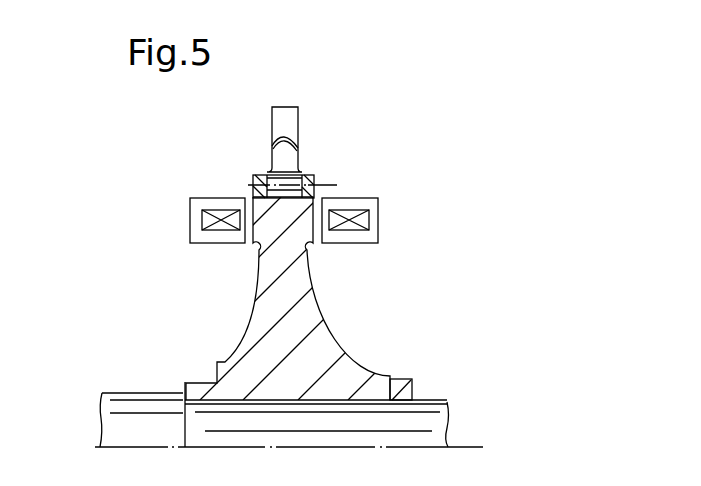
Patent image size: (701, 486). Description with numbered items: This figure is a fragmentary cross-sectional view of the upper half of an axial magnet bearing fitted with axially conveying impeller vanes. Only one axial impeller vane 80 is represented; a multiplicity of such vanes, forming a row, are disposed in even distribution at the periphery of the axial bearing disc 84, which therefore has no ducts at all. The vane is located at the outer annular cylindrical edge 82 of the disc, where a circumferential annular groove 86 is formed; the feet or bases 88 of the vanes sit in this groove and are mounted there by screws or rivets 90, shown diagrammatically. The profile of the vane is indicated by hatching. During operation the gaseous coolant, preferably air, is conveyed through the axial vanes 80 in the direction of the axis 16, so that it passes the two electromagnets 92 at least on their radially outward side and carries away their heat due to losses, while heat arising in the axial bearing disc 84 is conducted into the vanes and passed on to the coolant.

The axis 16 is at (460, 447).
The axial impeller vane 80 is at (295, 125).
The outer annular cylindrical edge 82 is at (252, 152).
The axial bearing disc 84 is at (314, 308).
The circumferential annular groove 86 is at (252, 178).
The feet or bases of the axial vanes 88 is at (302, 175).
The screws or rivets 90 is at (333, 184).
The electromagnets 92 is at (197, 217).